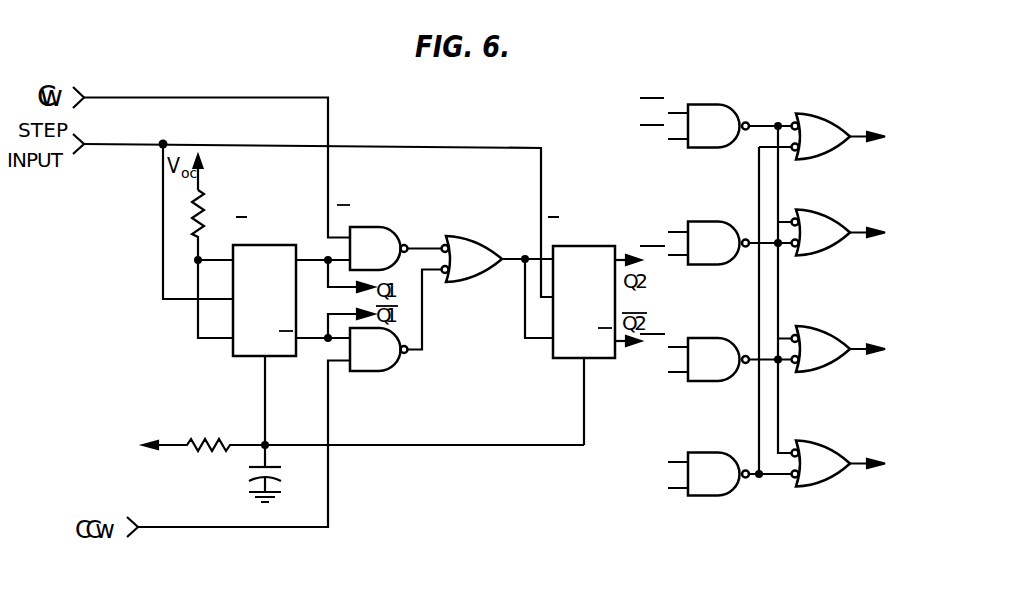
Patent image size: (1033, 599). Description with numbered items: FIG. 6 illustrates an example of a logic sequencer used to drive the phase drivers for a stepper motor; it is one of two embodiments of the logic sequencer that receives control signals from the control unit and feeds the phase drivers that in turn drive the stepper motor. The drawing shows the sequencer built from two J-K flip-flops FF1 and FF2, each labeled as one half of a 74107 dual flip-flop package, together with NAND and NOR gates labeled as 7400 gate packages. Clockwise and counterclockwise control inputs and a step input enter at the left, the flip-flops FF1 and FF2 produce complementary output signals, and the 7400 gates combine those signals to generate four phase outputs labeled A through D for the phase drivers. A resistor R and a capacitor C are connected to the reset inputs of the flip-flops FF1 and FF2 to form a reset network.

The 7400 quad NAND gate package 7400 is at (622, 296).
The 74107 dual J-K flip-flop package 74107 is at (425, 278).
The first J-K flip-flop FF1 is at (264, 302).
The second J-K flip-flop FF2 is at (584, 302).
The reset resistor R is at (363, 432).
The reset capacitor C is at (274, 473).